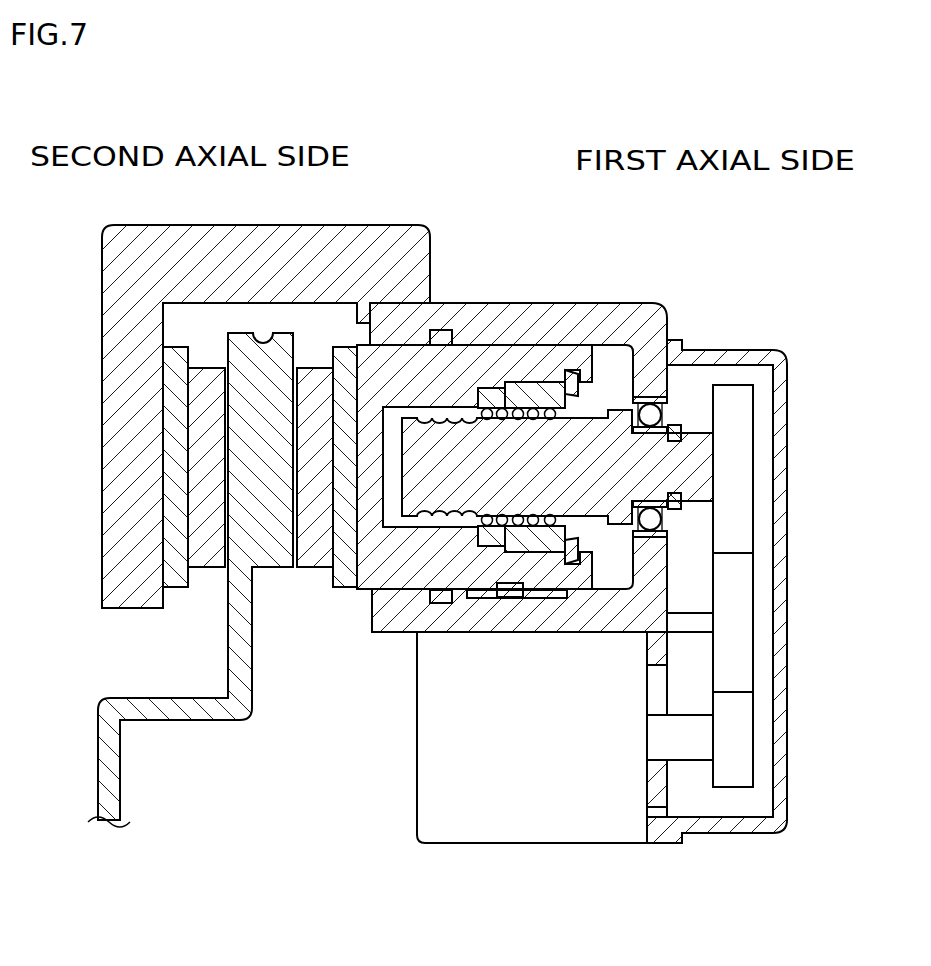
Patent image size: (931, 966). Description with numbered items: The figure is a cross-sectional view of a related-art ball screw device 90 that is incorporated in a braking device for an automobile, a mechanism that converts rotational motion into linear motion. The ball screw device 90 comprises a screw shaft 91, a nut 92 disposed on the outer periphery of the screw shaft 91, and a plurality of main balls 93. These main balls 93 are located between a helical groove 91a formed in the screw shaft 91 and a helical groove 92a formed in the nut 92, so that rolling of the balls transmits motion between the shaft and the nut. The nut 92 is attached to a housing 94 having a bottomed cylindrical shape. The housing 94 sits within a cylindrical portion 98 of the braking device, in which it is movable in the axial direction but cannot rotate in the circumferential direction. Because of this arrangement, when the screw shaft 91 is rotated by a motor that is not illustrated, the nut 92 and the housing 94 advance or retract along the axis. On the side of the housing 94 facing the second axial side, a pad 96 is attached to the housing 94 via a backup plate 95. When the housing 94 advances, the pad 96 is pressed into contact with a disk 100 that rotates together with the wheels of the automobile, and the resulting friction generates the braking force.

The ball screw device 90 is at (550, 544).
The screw shaft 91 is at (402, 497).
The helical groove 91a is at (522, 412).
The nut 92 is at (542, 545).
The helical groove 92a is at (580, 396).
The main balls 93 is at (488, 540).
The housing 94 is at (402, 562).
The backup plate 95 is at (349, 372).
The pad 96 is at (312, 378).
The cylindrical portion 98 is at (548, 325).
The disk 100 is at (258, 334).